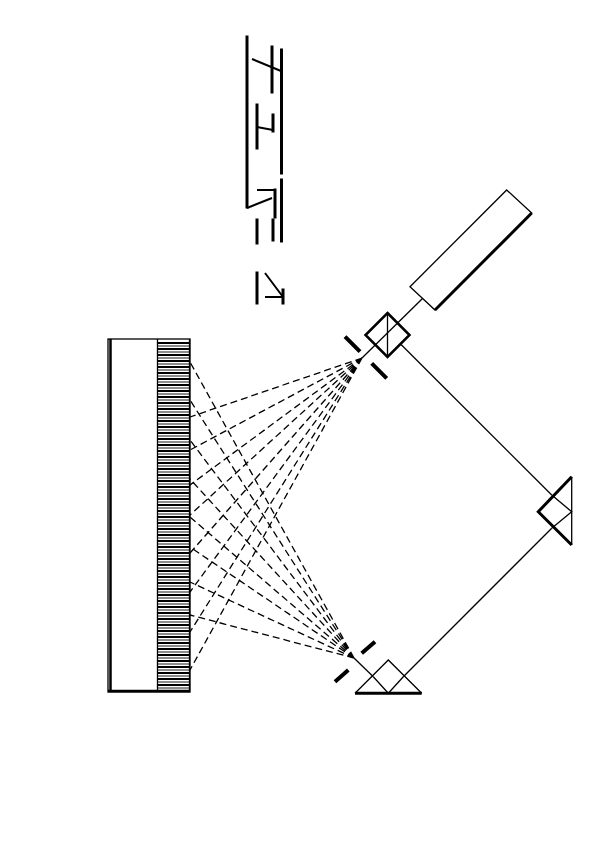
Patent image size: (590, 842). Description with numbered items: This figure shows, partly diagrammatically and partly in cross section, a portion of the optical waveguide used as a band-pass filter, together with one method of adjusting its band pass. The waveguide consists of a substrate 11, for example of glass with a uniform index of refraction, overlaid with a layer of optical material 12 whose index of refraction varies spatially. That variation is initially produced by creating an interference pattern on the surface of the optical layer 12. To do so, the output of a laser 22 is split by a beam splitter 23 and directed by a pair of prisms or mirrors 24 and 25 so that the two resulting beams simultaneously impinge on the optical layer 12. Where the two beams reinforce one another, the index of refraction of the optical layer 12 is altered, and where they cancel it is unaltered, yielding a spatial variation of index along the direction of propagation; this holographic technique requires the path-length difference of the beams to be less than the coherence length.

The substrate 11 is at (128, 694).
The optical layer 12 is at (178, 694).
The laser 22 is at (462, 288).
The beam splitter 23 is at (410, 337).
The prism or mirror 24 is at (542, 510).
The prism or mirror 25 is at (422, 693).